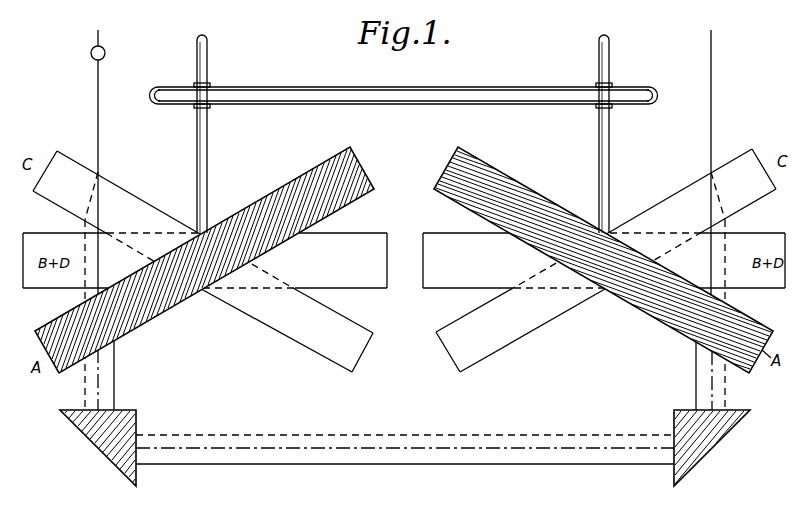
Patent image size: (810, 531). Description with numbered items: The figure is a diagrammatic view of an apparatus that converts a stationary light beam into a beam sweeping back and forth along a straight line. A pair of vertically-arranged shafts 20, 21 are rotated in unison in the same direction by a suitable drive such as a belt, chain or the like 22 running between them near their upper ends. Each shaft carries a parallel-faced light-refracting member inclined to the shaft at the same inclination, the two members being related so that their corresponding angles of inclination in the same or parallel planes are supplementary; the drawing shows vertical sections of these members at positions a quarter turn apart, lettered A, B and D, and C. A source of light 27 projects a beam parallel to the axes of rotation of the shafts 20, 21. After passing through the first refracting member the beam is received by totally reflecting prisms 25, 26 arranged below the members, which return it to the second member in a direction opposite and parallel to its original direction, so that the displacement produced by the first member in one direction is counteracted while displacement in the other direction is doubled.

The vertically-arranged shaft 20 is at (207, 148).
The vertically-arranged shaft 21 is at (609, 148).
The belt, chain or the like 22 is at (482, 88).
The totally reflecting prism 25 is at (78, 422).
The totally reflecting prism 26 is at (740, 416).
The source of light 27 is at (104, 49).